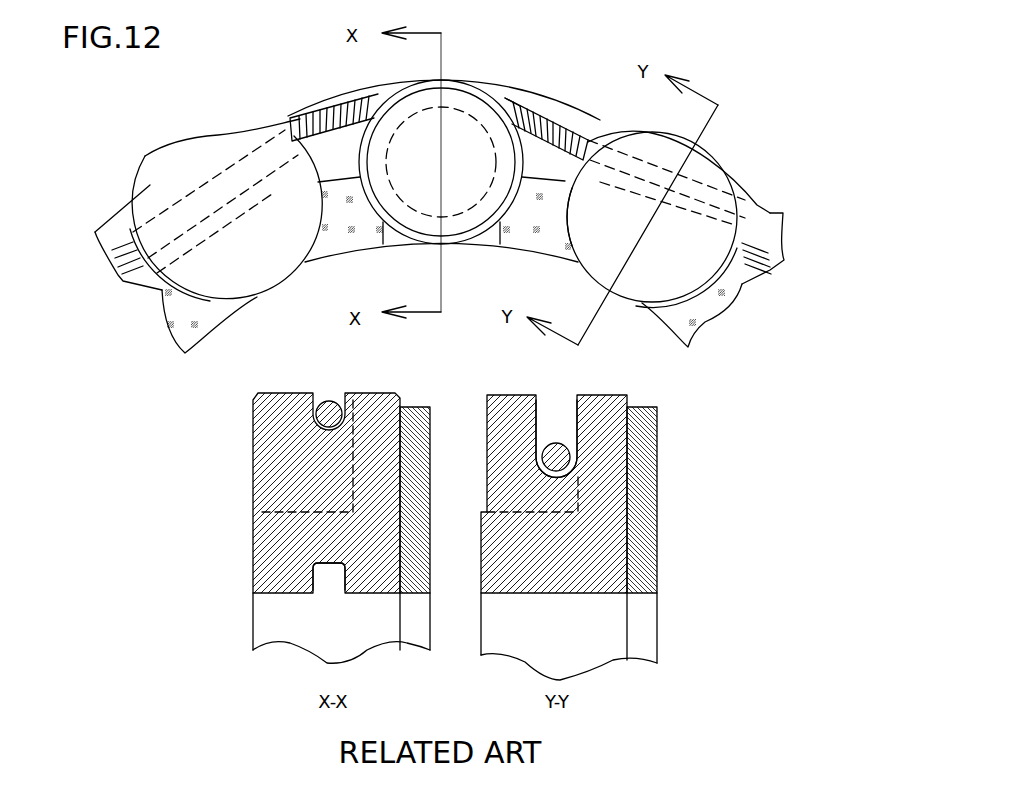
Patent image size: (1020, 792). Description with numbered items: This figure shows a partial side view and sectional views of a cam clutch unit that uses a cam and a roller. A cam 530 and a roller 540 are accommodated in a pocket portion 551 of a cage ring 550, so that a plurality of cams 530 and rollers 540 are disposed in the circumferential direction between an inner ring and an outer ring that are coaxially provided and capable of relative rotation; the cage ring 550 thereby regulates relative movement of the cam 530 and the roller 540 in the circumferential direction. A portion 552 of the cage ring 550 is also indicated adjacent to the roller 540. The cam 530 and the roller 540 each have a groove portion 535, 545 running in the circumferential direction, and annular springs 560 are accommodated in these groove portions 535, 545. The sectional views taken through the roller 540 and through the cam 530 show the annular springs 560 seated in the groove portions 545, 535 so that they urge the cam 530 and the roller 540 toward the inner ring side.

The cam 530 is at (208, 158).
The groove portion 535 is at (577, 383).
The roller 540 is at (421, 101).
The groove portion 545 is at (343, 593).
The cage ring 550 is at (570, 102).
The pocket portion 551 is at (143, 178).
The joint portion 552 is at (521, 79).
The annular spring 560 is at (328, 114).